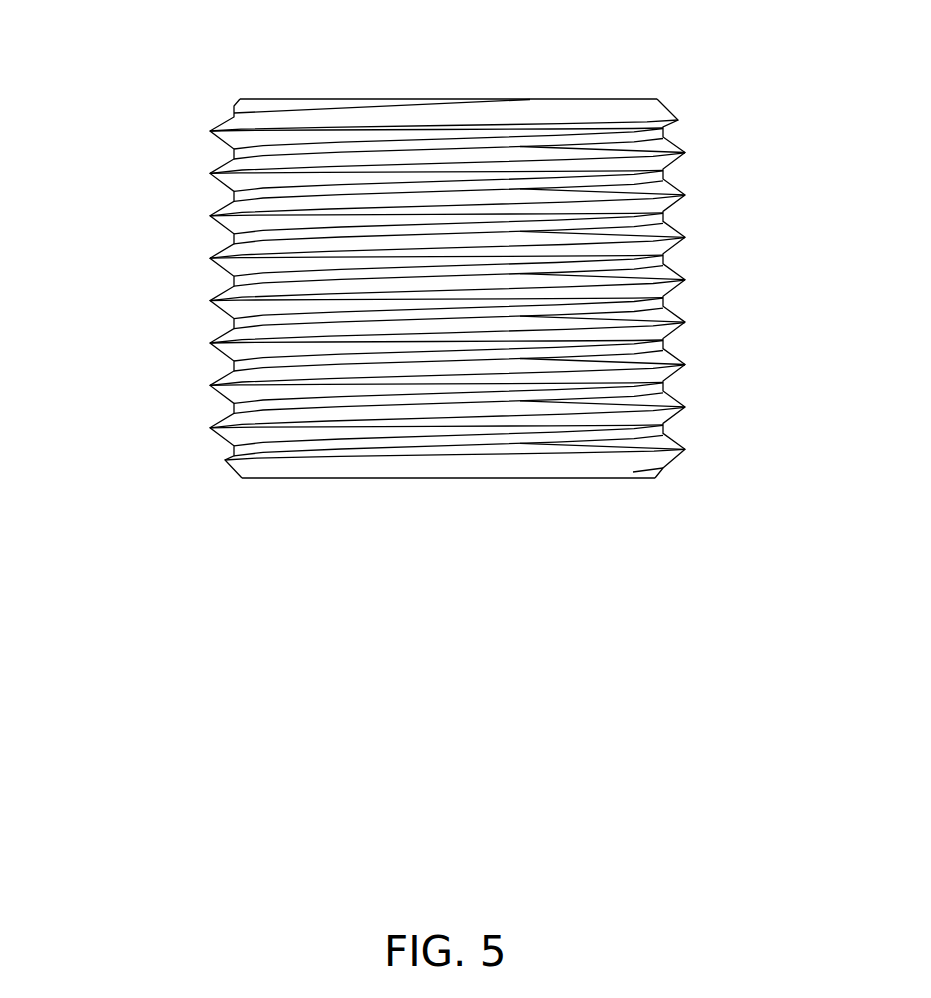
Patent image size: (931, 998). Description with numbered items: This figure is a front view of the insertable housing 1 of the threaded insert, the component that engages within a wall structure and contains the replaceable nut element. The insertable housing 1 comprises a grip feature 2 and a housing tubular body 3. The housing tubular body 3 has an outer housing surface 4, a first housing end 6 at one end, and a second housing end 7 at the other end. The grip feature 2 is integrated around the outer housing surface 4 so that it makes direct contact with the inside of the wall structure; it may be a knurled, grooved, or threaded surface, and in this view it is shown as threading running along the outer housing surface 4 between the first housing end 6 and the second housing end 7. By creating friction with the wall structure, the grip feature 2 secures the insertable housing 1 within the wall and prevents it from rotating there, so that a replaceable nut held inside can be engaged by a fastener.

The insertable housing 1 is at (157, 275).
The grip feature 2 is at (690, 244).
The housing tubular body 3 is at (669, 348).
The outer housing surface 4 is at (669, 348).
The first housing end 6 is at (222, 47).
The second housing end 7 is at (549, 96).